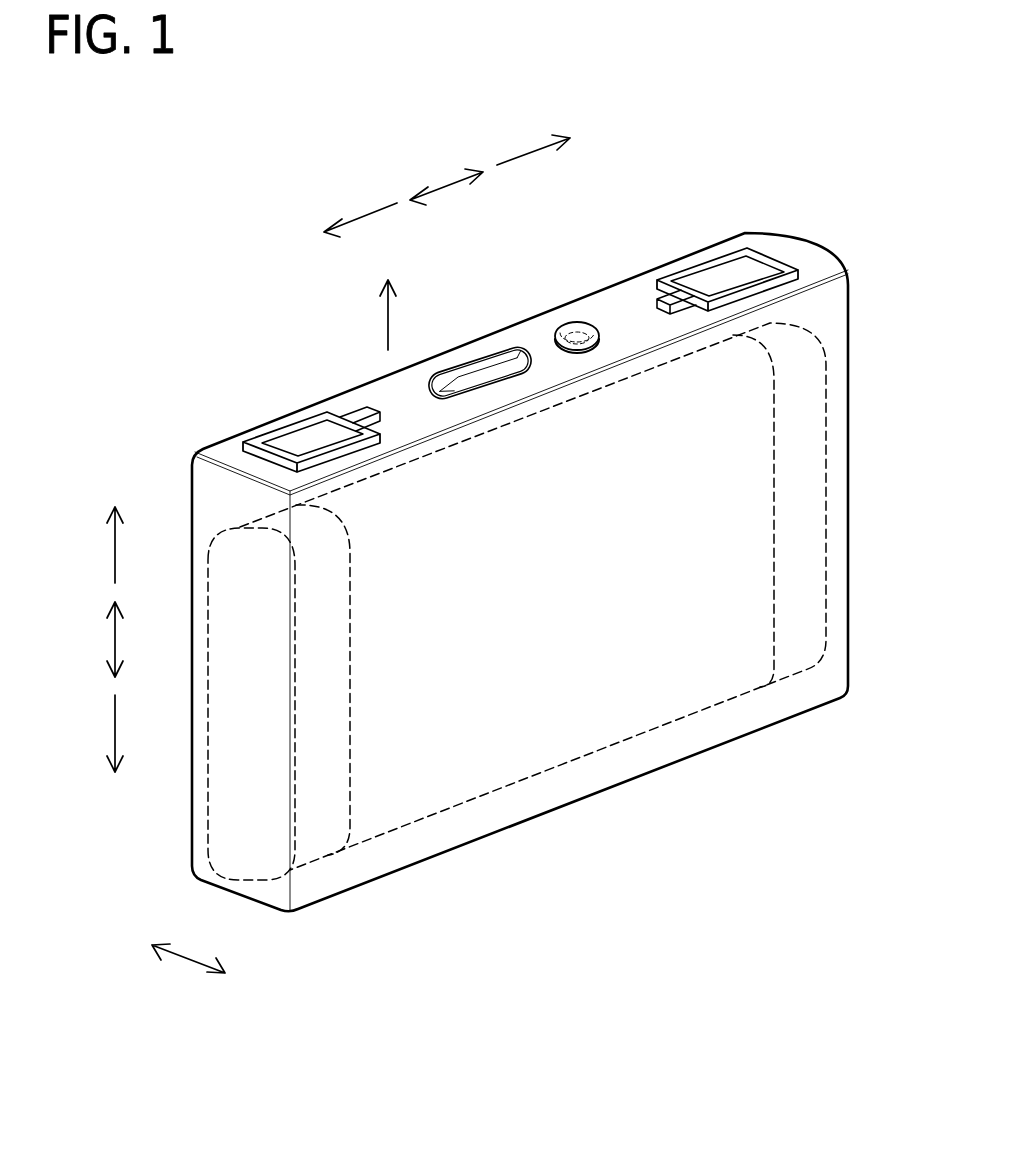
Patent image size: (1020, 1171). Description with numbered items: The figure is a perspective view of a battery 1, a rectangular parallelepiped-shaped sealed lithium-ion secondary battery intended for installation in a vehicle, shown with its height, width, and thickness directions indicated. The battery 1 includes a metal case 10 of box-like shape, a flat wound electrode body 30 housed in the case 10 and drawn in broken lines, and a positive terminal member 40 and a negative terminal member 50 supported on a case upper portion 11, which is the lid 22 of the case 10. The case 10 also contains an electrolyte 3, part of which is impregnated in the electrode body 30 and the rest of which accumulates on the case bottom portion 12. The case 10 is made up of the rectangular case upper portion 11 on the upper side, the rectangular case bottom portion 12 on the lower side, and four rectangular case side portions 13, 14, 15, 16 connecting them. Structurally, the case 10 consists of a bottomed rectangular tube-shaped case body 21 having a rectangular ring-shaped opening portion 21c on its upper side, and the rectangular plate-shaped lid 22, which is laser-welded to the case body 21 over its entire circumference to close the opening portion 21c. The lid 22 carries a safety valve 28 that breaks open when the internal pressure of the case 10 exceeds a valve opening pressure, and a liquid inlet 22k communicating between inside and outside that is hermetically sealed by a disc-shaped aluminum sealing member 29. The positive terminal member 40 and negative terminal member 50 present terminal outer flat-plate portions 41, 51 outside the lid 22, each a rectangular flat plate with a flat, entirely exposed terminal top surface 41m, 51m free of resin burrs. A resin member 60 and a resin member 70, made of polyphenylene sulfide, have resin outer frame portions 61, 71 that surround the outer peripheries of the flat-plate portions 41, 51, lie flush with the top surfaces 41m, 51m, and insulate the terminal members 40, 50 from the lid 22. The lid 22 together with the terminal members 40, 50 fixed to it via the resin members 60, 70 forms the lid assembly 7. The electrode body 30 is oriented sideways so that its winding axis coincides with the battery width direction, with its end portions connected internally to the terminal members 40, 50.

The battery 1 is at (303, 294).
The electrolyte 3 is at (480, 765).
The lid assembly 7 is at (593, 302).
The case 10 is at (526, 350).
The case upper portion 11 is at (449, 360).
The case bottom portion 12 is at (381, 885).
The case side portion 13 is at (430, 806).
The case side portion 14 is at (192, 604).
The case side portion 15 is at (263, 893).
The case side portion 16 is at (849, 667).
The case body 21 is at (688, 752).
The opening portion 21c is at (232, 492).
The lid 22 is at (531, 344).
The liquid inlet 22k is at (571, 355).
The safety valve 28 is at (495, 376).
The sealing member 29 is at (598, 330).
The electrode body 30 is at (550, 750).
The positive terminal member 40 is at (270, 395).
The terminal outer flat-plate portion 41 is at (285, 425).
The terminal top surface 41m is at (297, 434).
The negative terminal member 50 is at (707, 220).
The terminal outer flat-plate portion 51 is at (733, 262).
The terminal top surface 51m is at (700, 272).
The resin member 60 is at (200, 406).
The resin outer frame portion 61 is at (240, 448).
The resin member 70 is at (631, 221).
The resin outer frame portion 71 is at (672, 282).